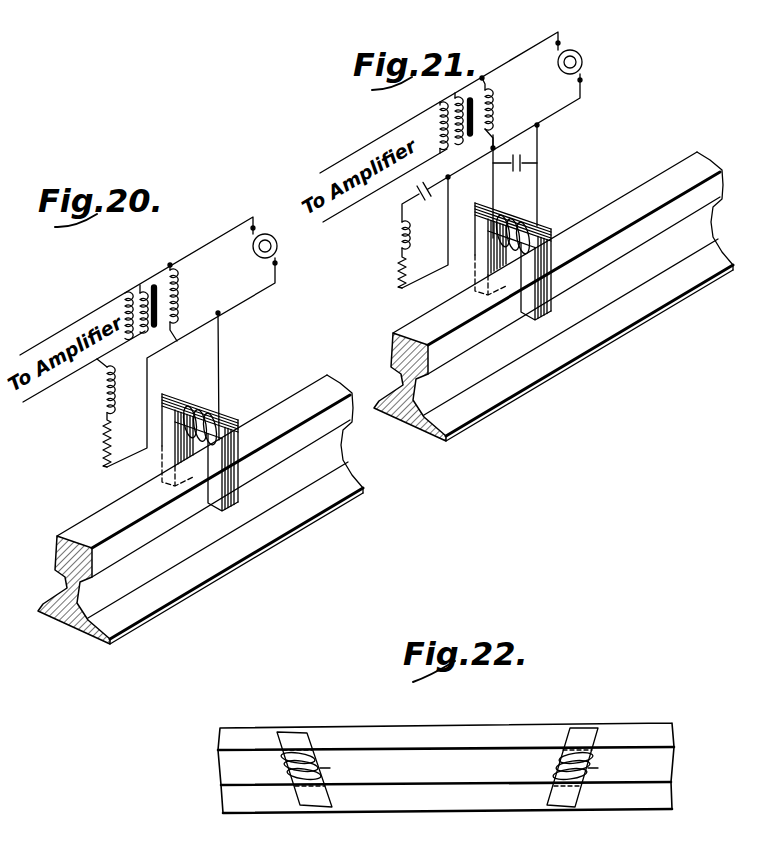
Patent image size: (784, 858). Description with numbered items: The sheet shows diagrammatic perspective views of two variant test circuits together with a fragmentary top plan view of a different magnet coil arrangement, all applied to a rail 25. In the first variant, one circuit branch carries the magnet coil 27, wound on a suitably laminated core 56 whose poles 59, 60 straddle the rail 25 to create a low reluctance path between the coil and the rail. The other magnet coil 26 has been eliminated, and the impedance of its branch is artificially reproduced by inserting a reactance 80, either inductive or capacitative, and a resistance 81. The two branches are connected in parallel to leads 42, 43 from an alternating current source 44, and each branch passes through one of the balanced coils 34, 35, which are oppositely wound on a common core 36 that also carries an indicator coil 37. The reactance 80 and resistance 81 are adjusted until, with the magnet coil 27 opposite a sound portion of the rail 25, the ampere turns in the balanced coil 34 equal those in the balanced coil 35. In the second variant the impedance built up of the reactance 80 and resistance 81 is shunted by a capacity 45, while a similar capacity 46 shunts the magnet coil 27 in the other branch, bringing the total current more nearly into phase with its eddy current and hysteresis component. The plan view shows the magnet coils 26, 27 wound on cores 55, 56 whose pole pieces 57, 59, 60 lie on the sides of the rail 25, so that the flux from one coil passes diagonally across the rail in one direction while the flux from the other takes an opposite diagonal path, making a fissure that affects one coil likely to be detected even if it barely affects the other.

In FIG. 20, the rail 25 is at (200, 509).
In FIG. 21, the rail 25 is at (553, 296).
In FIG. 22, the rail 25 is at (446, 768).
In FIG. 22, the magnet coil 26 is at (333, 767).
In FIG. 20, the magnet coil 27 is at (207, 403).
In FIG. 21, the magnet coil 27 is at (522, 218).
In FIG. 22, the magnet coil 27 is at (596, 767).
In FIG. 20, the balanced coil 34 is at (142, 290).
In FIG. 21, the balanced coil 34 is at (454, 99).
In FIG. 20, the balanced coil 35 is at (177, 298).
In FIG. 21, the balanced coil 35 is at (490, 102).
In FIG. 20, the core 36 is at (154, 327).
In FIG. 21, the core 36 is at (470, 137).
In FIG. 20, the indicator coil 37 is at (120, 300).
In FIG. 21, the indicator coil 37 is at (435, 123).
In FIG. 20, the lead 42 is at (213, 242).
In FIG. 21, the lead 42 is at (520, 55).
In FIG. 20, the lead 43 is at (253, 296).
In FIG. 21, the lead 43 is at (563, 108).
In FIG. 20, the alternating current source 44 is at (278, 246).
In FIG. 21, the alternating current source 44 is at (583, 58).
In FIG. 21, the capacity 45 is at (413, 203).
In FIG. 21, the capacity 46 is at (526, 164).
In FIG. 22, the laminated core 55 is at (284, 771).
In FIG. 20, the laminated core 56 is at (209, 436).
In FIG. 21, the laminated core 56 is at (498, 268).
In FIG. 22, the laminated core 56 is at (556, 768).
In FIG. 22, the pole 57 is at (293, 738).
In FIG. 20, the pole 59 is at (170, 463).
In FIG. 21, the pole 59 is at (478, 280).
In FIG. 22, the pole 59 is at (582, 735).
In FIG. 20, the pole 60 is at (236, 480).
In FIG. 21, the pole 60 is at (530, 312).
In FIG. 20, the reactance 80 is at (101, 393).
In FIG. 21, the reactance 80 is at (398, 232).
In FIG. 20, the resistance 81 is at (103, 437).
In FIG. 21, the resistance 81 is at (398, 274).